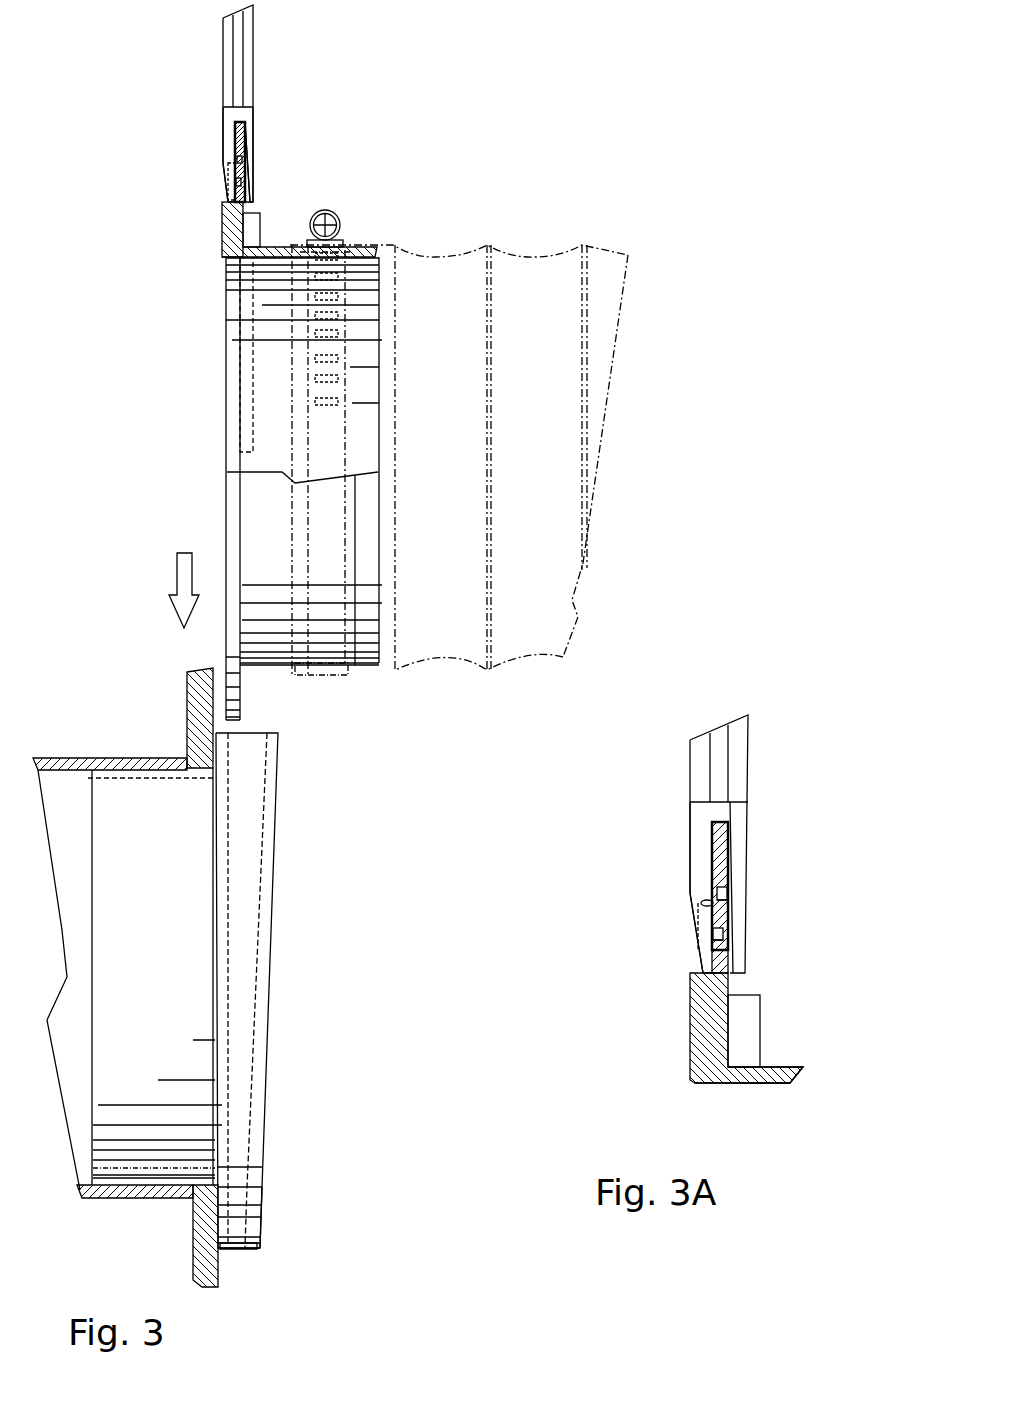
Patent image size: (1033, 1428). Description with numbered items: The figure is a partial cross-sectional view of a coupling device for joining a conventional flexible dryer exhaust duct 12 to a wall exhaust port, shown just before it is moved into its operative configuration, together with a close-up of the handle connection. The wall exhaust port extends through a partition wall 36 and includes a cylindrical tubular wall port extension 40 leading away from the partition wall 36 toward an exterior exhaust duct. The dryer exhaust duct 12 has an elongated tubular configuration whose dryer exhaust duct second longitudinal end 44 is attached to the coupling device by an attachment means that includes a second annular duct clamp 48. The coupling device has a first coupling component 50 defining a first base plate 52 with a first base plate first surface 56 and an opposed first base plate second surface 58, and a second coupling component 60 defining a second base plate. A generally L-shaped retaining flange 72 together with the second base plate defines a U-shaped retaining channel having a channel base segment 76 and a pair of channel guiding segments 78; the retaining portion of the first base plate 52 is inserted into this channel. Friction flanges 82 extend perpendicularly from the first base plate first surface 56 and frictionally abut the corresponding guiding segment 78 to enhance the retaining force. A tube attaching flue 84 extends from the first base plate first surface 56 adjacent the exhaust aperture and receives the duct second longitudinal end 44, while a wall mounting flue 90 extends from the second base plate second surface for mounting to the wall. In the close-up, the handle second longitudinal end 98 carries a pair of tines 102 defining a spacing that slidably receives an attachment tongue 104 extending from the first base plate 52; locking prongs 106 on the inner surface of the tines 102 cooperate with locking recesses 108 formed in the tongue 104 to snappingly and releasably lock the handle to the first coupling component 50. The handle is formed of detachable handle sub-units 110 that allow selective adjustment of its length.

In FIG. 3, the dryer exhaust duct 12 is at (537, 295).
In FIG. 3, the partition wall 36 is at (210, 1282).
In FIG. 3, the wall port extension 40 is at (140, 750).
In FIG. 3, the dryer exhaust duct second longitudinal end 44 is at (475, 210).
In FIG. 3, the second annular duct clamp 48 is at (340, 382).
In FIG. 3A, the first coupling component 50 is at (825, 1065).
In FIG. 3, the first base plate 52 is at (232, 540).
In FIG. 3A, the first base plate 52 is at (705, 1020).
In FIG. 3, the first base plate first surface 56 is at (258, 710).
In FIG. 3, the first base plate second surface 58 is at (217, 366).
In FIG. 3, the second coupling component 60 is at (320, 825).
In FIG. 3, the retaining flange 72 is at (268, 1147).
In FIG. 3, the channel base segment 76 is at (240, 1250).
In FIG. 3, the channel guiding segments 78 is at (245, 895).
In FIG. 3, the friction flanges 82 is at (255, 226).
In FIG. 3A, the friction flanges 82 is at (748, 1027).
In FIG. 3, the tube attaching flue 84 is at (262, 497).
In FIG. 3A, the tube attaching flue 84 is at (780, 1087).
In FIG. 3, the wall mounting flue 90 is at (115, 860).
In FIG. 3, the handle second longitudinal end 98 is at (192, 127).
In FIG. 3A, the handle second longitudinal end 98 is at (768, 856).
In FIG. 3, the tines 102 is at (222, 152).
In FIG. 3A, the tines 102 is at (740, 840).
In FIG. 3, the attachment tongue 104 is at (236, 142).
In FIG. 3A, the attachment tongue 104 is at (715, 868).
In FIG. 3A, the locking prongs 106 is at (730, 890).
In FIG. 3A, the locking recesses 108 is at (765, 950).
In FIG. 3, the handle sub-units 110 is at (232, 76).